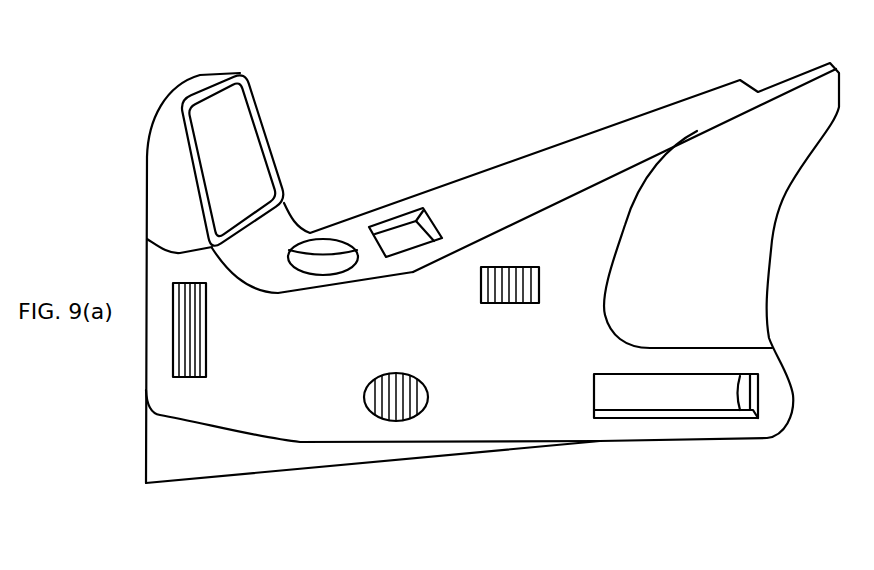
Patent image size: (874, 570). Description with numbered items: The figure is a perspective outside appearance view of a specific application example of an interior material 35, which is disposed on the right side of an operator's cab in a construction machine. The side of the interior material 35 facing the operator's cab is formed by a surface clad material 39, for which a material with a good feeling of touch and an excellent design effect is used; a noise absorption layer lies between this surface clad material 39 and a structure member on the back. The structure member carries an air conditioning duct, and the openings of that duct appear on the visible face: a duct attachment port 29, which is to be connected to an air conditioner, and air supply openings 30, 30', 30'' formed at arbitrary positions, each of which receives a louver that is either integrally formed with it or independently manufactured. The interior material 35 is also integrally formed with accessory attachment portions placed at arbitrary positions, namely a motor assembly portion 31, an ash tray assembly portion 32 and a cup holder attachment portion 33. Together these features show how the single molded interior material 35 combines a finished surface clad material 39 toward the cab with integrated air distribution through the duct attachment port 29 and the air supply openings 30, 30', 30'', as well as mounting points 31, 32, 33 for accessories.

The duct attachment port 29 is at (672, 403).
The air supply opening 30 is at (510, 388).
The air supply opening 30' is at (391, 447).
The air supply opening 30'' is at (196, 415).
The motor assembly portion 31 is at (245, 128).
The ash tray assembly portion 32 is at (413, 228).
The cup holder attachment portion 33 is at (323, 263).
The interior material 35 is at (532, 135).
The surface clad material 39 is at (609, 186).